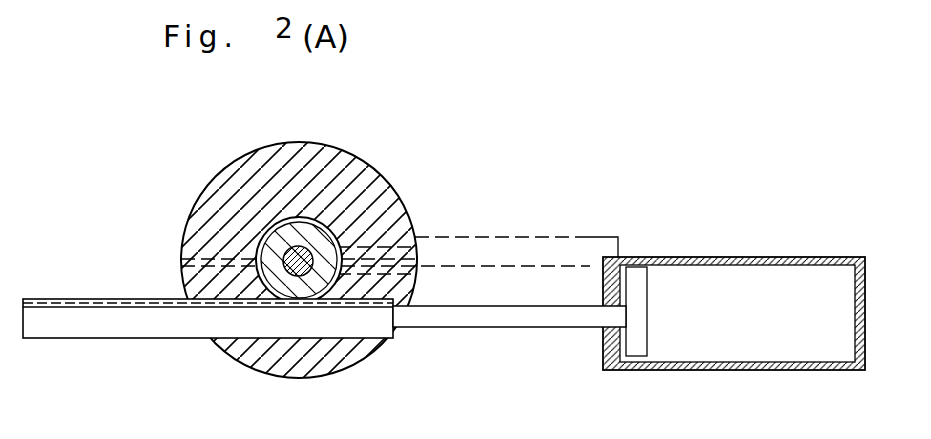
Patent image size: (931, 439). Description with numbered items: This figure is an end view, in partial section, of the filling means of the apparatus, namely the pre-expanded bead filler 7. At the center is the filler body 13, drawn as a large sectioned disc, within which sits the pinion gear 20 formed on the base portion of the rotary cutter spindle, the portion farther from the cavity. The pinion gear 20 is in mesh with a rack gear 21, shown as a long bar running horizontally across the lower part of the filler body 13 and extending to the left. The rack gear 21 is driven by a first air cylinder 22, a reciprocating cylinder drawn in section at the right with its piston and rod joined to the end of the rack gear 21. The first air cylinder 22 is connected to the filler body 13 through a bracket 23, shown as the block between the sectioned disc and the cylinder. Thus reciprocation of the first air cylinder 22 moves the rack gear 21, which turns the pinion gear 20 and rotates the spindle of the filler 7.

The pre-expanded bead filler 7 is at (216, 119).
The filler body 13 is at (384, 192).
The pinion gear 20 is at (262, 235).
The rack gear 21 is at (112, 338).
The first air cylinder 22 is at (760, 256).
The bracket 23 is at (582, 236).